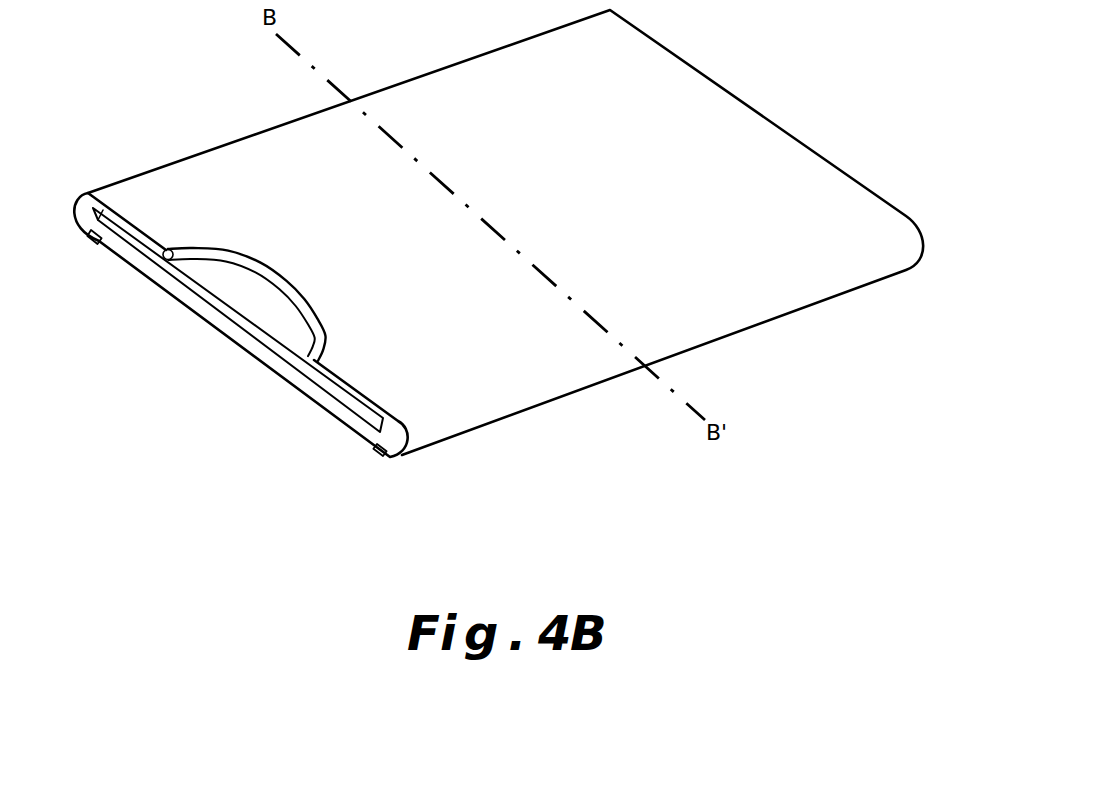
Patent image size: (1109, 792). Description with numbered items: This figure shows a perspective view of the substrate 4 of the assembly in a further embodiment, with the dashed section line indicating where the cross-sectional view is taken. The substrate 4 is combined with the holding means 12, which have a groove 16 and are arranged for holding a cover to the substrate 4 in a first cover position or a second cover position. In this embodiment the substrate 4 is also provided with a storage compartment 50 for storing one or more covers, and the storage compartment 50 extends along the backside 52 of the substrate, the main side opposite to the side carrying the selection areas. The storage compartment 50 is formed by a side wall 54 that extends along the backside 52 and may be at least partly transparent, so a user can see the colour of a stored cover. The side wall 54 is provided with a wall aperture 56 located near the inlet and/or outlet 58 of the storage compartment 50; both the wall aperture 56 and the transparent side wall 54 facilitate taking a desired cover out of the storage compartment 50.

The substrate 4 is at (268, 313).
The holding means 12 is at (90, 180).
The groove 16 is at (96, 260).
The storage compartment 50 is at (195, 276).
The backside 52 is at (236, 301).
The side wall 54 is at (573, 194).
The wall aperture 56 is at (250, 280).
The inlet and/or outlet 58 is at (330, 380).